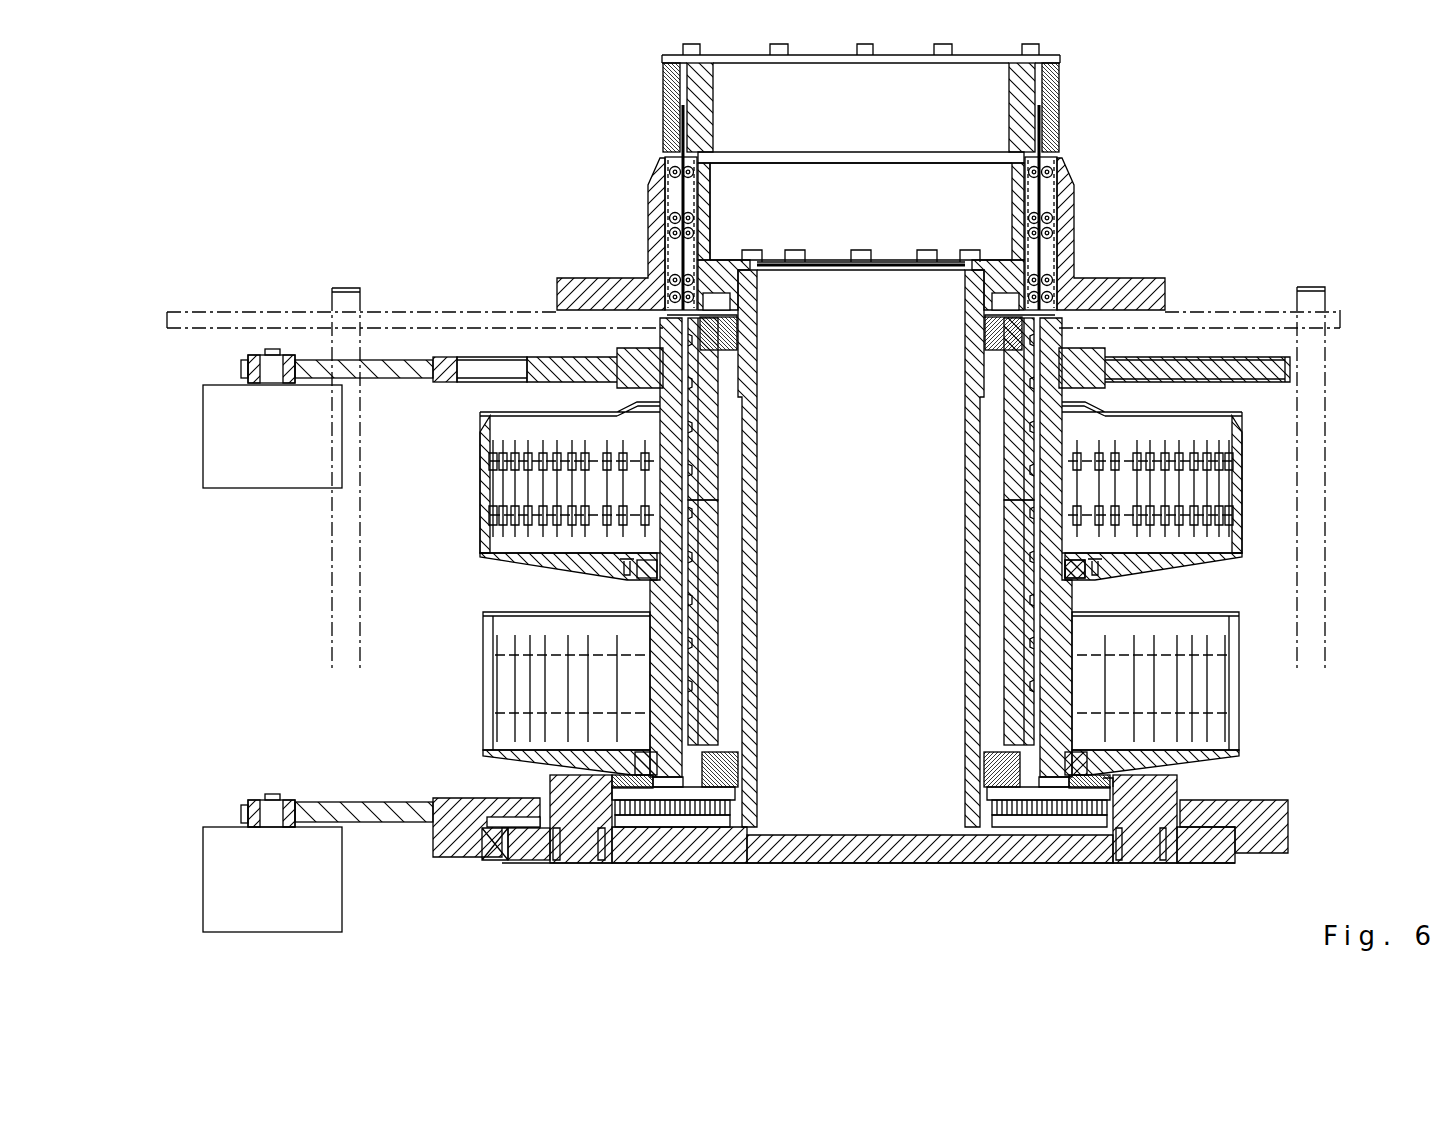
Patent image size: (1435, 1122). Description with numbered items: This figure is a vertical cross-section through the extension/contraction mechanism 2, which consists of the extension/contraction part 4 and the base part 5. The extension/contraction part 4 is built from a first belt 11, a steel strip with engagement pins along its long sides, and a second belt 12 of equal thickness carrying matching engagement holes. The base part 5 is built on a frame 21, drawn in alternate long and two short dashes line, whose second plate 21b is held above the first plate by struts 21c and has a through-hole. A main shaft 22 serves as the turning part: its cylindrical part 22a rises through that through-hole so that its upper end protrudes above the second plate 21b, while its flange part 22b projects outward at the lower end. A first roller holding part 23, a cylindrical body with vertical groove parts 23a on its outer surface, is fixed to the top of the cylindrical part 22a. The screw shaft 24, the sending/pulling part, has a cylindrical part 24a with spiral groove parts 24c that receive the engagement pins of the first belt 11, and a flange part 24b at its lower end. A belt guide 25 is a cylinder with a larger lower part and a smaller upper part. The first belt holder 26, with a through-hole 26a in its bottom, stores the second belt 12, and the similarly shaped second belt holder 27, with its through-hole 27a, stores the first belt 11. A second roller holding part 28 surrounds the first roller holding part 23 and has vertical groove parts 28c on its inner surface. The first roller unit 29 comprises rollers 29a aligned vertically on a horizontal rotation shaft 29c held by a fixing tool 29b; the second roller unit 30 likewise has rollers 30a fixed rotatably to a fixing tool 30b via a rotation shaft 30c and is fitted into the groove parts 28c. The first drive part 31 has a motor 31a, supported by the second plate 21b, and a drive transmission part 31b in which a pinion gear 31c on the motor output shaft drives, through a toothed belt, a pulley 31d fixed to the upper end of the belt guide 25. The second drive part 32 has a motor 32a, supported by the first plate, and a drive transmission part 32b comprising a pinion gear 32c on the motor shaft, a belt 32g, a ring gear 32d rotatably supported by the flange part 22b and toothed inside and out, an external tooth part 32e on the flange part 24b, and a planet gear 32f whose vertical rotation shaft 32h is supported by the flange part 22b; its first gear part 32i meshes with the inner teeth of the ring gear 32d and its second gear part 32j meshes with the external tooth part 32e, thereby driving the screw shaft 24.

The extension/contraction mechanism 2 is at (1314, 127).
The extension/contraction part 4 is at (1062, 190).
The base part 5 is at (801, 430).
The first belt 11 is at (1196, 487).
The second belt 12 is at (1196, 680).
The frame 21 is at (1337, 299).
The second plate 21b is at (1260, 325).
The struts 21c is at (1312, 466).
The main shaft 22 is at (702, 870).
The cylindrical part 22a is at (752, 603).
The flange part 22b is at (665, 855).
The first roller holding part 23 is at (714, 218).
The groove parts 23a is at (700, 248).
The screw shaft 24 is at (723, 456).
The cylindrical part 24a is at (714, 541).
The flange part 24b is at (612, 835).
The groove parts 24c is at (692, 498).
The belt guide 25 is at (684, 717).
The first belt holder 26 is at (1247, 709).
The through-hole 26a is at (1092, 770).
The second belt holder 27 is at (471, 500).
The through-hole 27a is at (1090, 568).
The second roller holding part 28 is at (1158, 273).
The groove parts 28c is at (668, 205).
The first roller unit 29 is at (1022, 249).
The rollers 29a is at (1025, 172).
The fixing tool 29b is at (1027, 196).
The rotation shaft 29c is at (1030, 224).
The second roller unit 30 is at (1056, 180).
The rollers 30a is at (1058, 170).
The fixing tool 30b is at (1058, 268).
The rotation shaft 30c is at (1056, 224).
The first drive part 31 is at (380, 361).
The motor 31a is at (240, 465).
The drive transmission part 31b is at (430, 298).
The pinion gear 31c is at (256, 356).
The pulley 31d is at (545, 357).
The second drive part 32 is at (731, 609).
The motor 32a is at (226, 880).
The drive transmission part 32b is at (781, 609).
The pinion gear 32c is at (256, 797).
The ring gear 32d is at (458, 852).
The external tooth part 32e is at (1110, 800).
The planet gear 32f is at (1180, 779).
The belt 32g is at (398, 361).
The rotation shaft 32h is at (1150, 864).
The first gear part 32i is at (1168, 820).
The second gear part 32j is at (1167, 800).